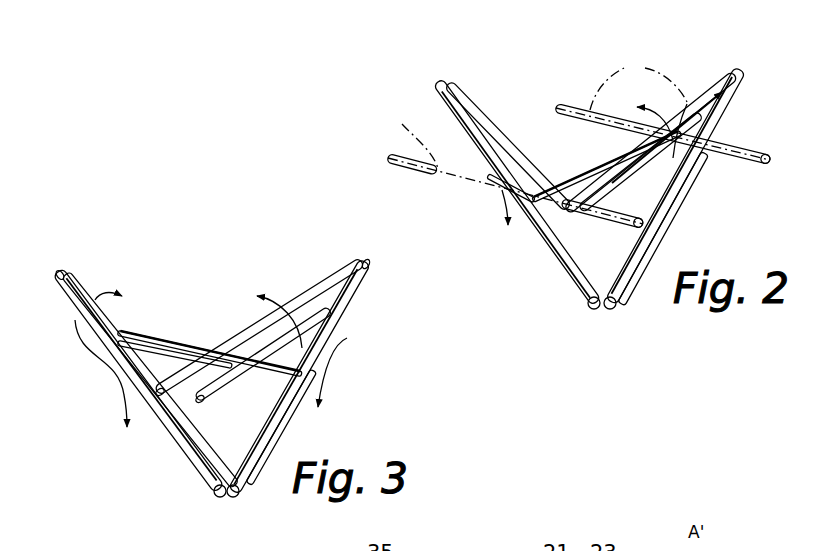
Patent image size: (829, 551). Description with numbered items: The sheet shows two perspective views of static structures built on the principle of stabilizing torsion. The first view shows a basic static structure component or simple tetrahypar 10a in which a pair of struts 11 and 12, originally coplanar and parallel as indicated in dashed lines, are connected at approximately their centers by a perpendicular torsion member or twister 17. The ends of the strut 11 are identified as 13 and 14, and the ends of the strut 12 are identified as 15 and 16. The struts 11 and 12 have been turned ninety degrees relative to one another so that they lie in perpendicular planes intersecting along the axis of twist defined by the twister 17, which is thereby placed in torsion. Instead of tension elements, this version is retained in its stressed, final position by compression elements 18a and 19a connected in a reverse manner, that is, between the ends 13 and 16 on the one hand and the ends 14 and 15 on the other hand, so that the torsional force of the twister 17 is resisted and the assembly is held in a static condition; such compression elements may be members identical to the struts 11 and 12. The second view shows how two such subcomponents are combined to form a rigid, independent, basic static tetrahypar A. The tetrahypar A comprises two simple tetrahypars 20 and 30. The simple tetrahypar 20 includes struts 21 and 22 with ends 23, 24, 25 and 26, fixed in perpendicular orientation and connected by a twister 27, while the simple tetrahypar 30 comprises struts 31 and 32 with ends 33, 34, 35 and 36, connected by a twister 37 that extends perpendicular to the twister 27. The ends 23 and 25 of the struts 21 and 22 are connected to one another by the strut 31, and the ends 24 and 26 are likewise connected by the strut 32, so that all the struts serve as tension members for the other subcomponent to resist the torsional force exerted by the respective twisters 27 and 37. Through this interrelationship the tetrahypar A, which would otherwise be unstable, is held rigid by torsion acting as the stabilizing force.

In FIG. 2, the folding chair frame 10a is at (683, 63).
In FIG. 2, the strut 11 is at (663, 111).
In FIG. 2, the strut 12 is at (450, 116).
In FIG. 2, the end of strut 13 is at (735, 68).
In FIG. 2, the end of strut 14 is at (593, 212).
In FIG. 2, the end of strut 15 is at (432, 86).
In FIG. 2, the end of strut 16 is at (594, 308).
In FIG. 2, the torsion member 17 is at (590, 168).
In FIG. 2, the compression element 18a is at (680, 200).
In FIG. 2, the compression element 19a is at (487, 123).
In FIG. 3, the simple tetrahypar 20 is at (95, 389).
In FIG. 3, the strut 21 is at (318, 291).
In FIG. 3, the strut 22 is at (153, 421).
In FIG. 3, the end of strut 23 is at (345, 264).
In FIG. 3, the end of strut 24 is at (212, 397).
In FIG. 3, the end of strut 25 is at (212, 497).
In FIG. 3, the end of strut 26 is at (56, 284).
In FIG. 3, the twister 27 is at (243, 349).
In FIG. 3, the simple tetrahypar 30 is at (340, 392).
In FIG. 3, the strut 31 is at (280, 433).
In FIG. 3, the strut 32 is at (118, 320).
In FIG. 3, the end of strut 33 is at (237, 497).
In FIG. 3, the end of strut 34 is at (372, 272).
In FIG. 3, the end of strut 35 is at (78, 279).
In FIG. 3, the end of strut 36 is at (163, 396).
In FIG. 3, the twister 37 is at (232, 367).
In FIG. 3, the tetrahypar A is at (224, 272).